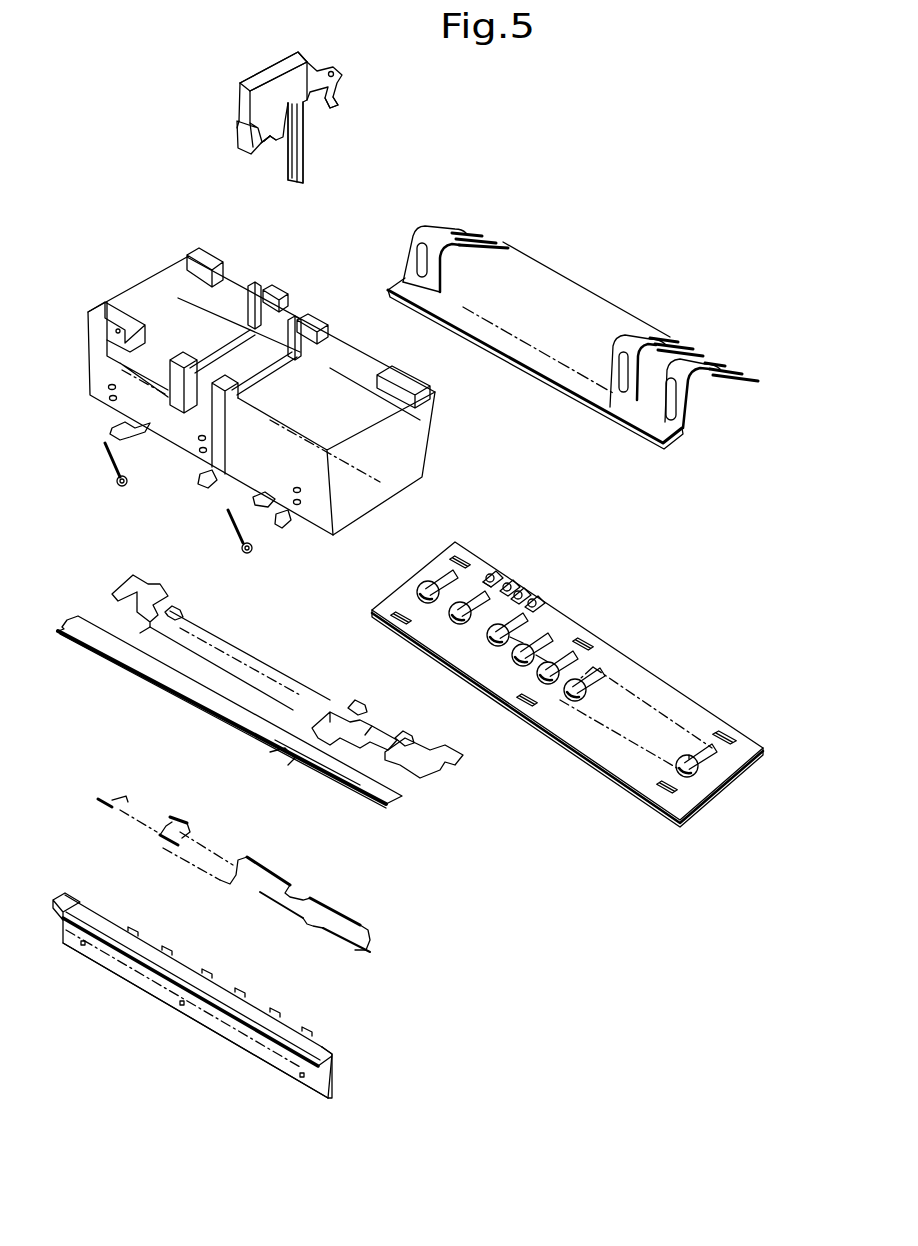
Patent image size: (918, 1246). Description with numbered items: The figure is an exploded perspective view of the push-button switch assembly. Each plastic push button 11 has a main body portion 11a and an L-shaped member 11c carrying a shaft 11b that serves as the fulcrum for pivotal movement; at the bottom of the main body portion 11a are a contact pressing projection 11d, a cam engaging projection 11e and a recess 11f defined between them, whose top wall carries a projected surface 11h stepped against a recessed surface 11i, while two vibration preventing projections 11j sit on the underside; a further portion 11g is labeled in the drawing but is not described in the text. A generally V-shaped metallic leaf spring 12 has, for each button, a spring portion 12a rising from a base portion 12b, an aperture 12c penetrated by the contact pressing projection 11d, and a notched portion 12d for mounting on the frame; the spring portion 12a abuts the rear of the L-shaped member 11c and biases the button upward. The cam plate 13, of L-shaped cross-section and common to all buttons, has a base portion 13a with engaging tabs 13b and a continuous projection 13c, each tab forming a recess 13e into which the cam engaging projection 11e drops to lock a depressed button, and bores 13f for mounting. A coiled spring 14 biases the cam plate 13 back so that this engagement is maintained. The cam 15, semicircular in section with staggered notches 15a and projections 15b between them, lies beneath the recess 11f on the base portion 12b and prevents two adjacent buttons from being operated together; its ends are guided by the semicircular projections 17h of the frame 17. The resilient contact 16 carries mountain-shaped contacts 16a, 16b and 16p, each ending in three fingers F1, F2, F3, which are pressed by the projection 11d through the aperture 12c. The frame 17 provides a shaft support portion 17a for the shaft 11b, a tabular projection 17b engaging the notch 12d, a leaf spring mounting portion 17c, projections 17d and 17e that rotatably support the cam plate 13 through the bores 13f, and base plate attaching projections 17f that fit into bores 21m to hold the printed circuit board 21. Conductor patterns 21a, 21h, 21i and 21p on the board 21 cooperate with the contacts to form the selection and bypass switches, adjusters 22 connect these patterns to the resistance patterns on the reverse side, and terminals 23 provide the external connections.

The push button 11 is at (266, 55).
The main body portion 11a is at (295, 70).
The shaft 11b is at (341, 74).
The L-shaped member 11c is at (347, 99).
The contact pressing projection 11d is at (303, 127).
The cam engaging projection 11e is at (240, 140).
The recess 11f is at (272, 132).
The notch 11g is at (270, 143).
The projected surface 11h is at (275, 141).
The recessed surface 11i is at (237, 121).
The vibration preventing projections 11j is at (303, 157).
The leaf spring 12 is at (258, 648).
The spring portion 12a is at (115, 591).
The base portion 12b is at (377, 800).
The aperture 12c is at (110, 628).
The notched portion 12d is at (178, 607).
The cam plate 13 is at (133, 992).
The base portion 13a is at (312, 1090).
The engaging tabs 13b is at (133, 930).
The continuous projection 13c is at (335, 1079).
The recess 13e is at (215, 1012).
The bore 13f is at (83, 947).
The coiled spring 14 is at (107, 450).
The cam 15 is at (100, 788).
The notches 15a is at (307, 895).
The projections 15b is at (160, 840).
The contact 16 is at (594, 279).
The mountain-shaped contact 16a is at (693, 393).
The mountain-shaped contact 16b is at (637, 337).
The mountain-shaped contact 16p is at (413, 236).
The finger F1 is at (474, 230).
The finger F2 is at (487, 237).
The finger F3 is at (508, 246).
The frame 17 is at (150, 266).
The shaft support portion 17a is at (210, 267).
The tabular projection 17b is at (250, 283).
The leaf spring mounting portion 17c is at (215, 355).
The projection 17d is at (110, 400).
The projection 17e is at (108, 386).
The base plate attaching projection 17f is at (127, 440).
The semicircular projection 17h is at (117, 327).
The printed circuit board 21 is at (656, 661).
The conductor pattern 21a is at (690, 752).
The conductor pattern 21h is at (545, 646).
The conductor pattern 21i is at (518, 628).
The bores 21m is at (467, 556).
The conductor pattern 21p is at (488, 574).
The adjusters 22 is at (417, 590).
The terminals 23 is at (540, 590).